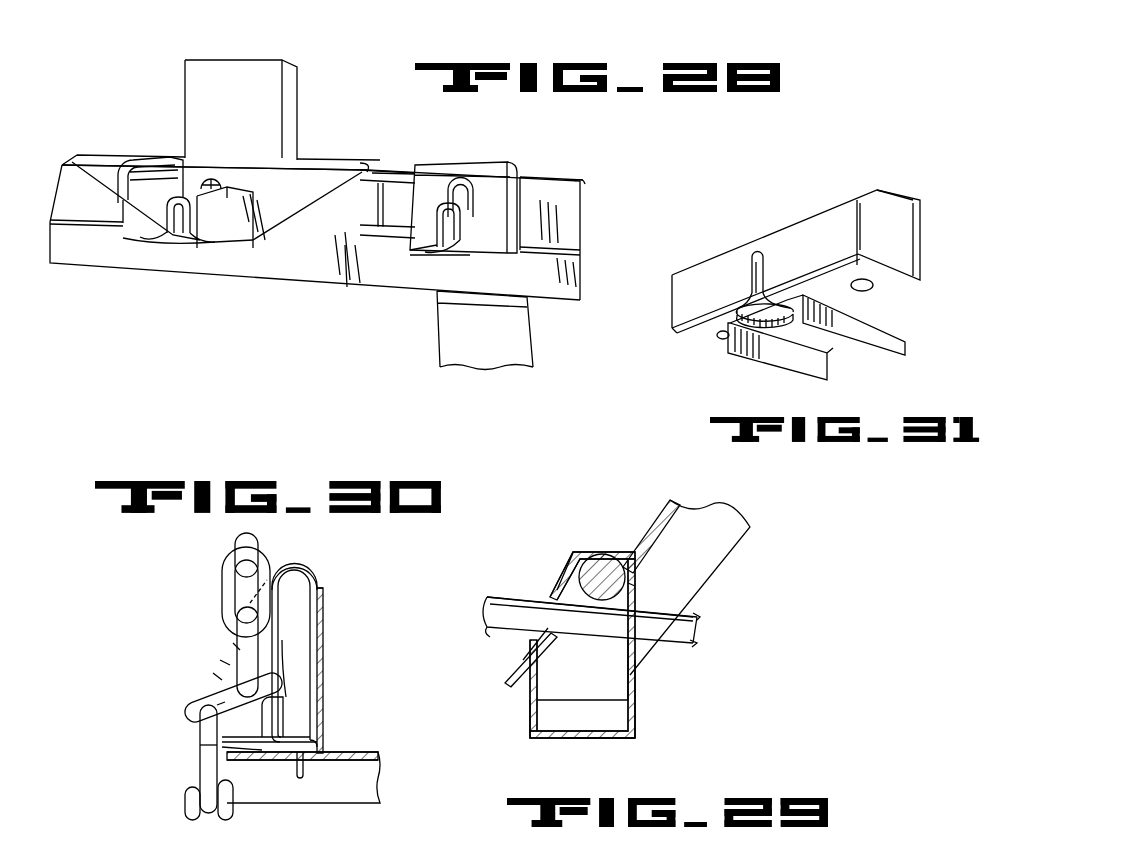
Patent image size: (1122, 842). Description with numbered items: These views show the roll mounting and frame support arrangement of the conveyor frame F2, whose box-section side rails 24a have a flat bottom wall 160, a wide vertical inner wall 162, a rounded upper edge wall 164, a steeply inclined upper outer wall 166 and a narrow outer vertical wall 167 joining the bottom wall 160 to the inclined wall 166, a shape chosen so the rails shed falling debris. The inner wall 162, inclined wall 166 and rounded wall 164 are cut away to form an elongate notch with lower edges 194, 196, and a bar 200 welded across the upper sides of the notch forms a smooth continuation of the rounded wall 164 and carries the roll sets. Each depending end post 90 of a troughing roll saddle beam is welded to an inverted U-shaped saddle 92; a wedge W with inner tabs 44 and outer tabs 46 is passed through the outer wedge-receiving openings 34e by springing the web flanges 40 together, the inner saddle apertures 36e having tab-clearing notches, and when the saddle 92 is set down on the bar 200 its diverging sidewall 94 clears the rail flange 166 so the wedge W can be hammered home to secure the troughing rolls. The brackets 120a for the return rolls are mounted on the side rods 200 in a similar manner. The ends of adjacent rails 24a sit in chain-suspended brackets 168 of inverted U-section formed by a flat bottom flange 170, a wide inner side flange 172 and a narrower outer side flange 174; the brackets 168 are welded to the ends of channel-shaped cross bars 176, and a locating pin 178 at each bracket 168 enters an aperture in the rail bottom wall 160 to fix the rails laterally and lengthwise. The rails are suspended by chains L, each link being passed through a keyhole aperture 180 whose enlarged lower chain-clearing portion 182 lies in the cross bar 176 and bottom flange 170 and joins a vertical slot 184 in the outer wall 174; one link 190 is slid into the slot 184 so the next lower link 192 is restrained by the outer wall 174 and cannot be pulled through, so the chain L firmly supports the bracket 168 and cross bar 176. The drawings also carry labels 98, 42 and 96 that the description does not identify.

In FIG. 28, the depending end post 90 is at (235, 68).
In FIG. 29, the depending end post 90 is at (737, 540).
In FIG. 28, the inverted U-shaped saddle 92 is at (103, 150).
In FIG. 29, the inverted U-shaped saddle 92 is at (648, 563).
In FIG. 28, the upper flange 98 is at (315, 160).
In FIG. 29, the upper flange 98 is at (563, 585).
In FIG. 28, the bar 200 is at (390, 174).
In FIG. 29, the bar 200 is at (598, 553).
In FIG. 28, the outer wedge-receiving openings 34e is at (222, 183).
In FIG. 29, the outer wedge-receiving openings 34e is at (563, 582).
In FIG. 29, the inner saddle apertures 36e is at (630, 588).
In FIG. 28, the wedge W is at (165, 212).
In FIG. 29, the wedge W is at (502, 593).
In FIG. 28, the web flanges 40 is at (205, 215).
In FIG. 29, the web flanges 40 is at (500, 612).
In FIG. 29, the bar end 42 is at (695, 606).
In FIG. 29, the inner tabs 44 is at (694, 636).
In FIG. 28, the outer tabs 46 is at (170, 226).
In FIG. 29, the outer tabs 46 is at (500, 630).
In FIG. 28, the diverging sidewall 94 is at (195, 243).
In FIG. 29, the diverging sidewall 94 is at (513, 652).
In FIG. 28, the flange 96 is at (325, 218).
In FIG. 29, the flange 96 is at (632, 697).
In FIG. 28, the brackets for the return rolls 120a is at (456, 348).
In FIG. 28, the rounded upper edge wall 164 is at (575, 177).
In FIG. 30, the rounded upper edge wall 164 is at (290, 562).
In FIG. 28, the box-section side rails 24a is at (577, 190).
In FIG. 30, the box-section side rails 24a is at (315, 562).
In FIG. 29, the box-section side rails 24a is at (632, 680).
In FIG. 28, the steeply inclined upper outer wall 166 is at (574, 223).
In FIG. 30, the steeply inclined upper outer wall 166 is at (233, 643).
In FIG. 29, the steeply inclined upper outer wall 166 is at (620, 653).
In FIG. 28, the narrow outer vertical wall 167 is at (574, 263).
In FIG. 30, the narrow outer vertical wall 167 is at (220, 660).
In FIG. 29, the narrow outer vertical wall 167 is at (537, 728).
In FIG. 31, the chain-suspended brackets 168 is at (893, 183).
In FIG. 30, the chain-suspended brackets 168 is at (330, 670).
In FIG. 31, the flat bottom flange 170 is at (690, 337).
In FIG. 30, the flat bottom flange 170 is at (300, 748).
In FIG. 31, the wide inner side flange 172 is at (908, 207).
In FIG. 30, the wide inner side flange 172 is at (325, 600).
In FIG. 31, the narrower outer side flange 174 is at (677, 310).
In FIG. 30, the narrower outer side flange 174 is at (213, 673).
In FIG. 31, the channel shaped cross bars 176 is at (908, 333).
In FIG. 30, the channel shaped cross bars 176 is at (363, 797).
In FIG. 31, the side rail locating pin 178 is at (723, 342).
In FIG. 30, the side rail locating pin 178 is at (282, 697).
In FIG. 31, the keyhole aperture 180 is at (768, 252).
In FIG. 30, the keyhole aperture 180 is at (205, 757).
In FIG. 31, the enlarged lower chain-clearing portion 182 is at (748, 302).
In FIG. 30, the enlarged lower chain-clearing portion 182 is at (238, 753).
In FIG. 31, the vertical slot 184 is at (760, 273).
In FIG. 30, the vertical slot 184 is at (215, 708).
In FIG. 30, the chain link 190 is at (190, 715).
In FIG. 30, the next lower link 192 is at (200, 747).
In FIG. 30, the flat bottom wall 160 is at (302, 733).
In FIG. 29, the flat bottom wall 160 is at (587, 743).
In FIG. 30, the wide vertical inner wall 162 is at (324, 637).
In FIG. 29, the wide vertical inner wall 162 is at (629, 713).
In FIG. 29, the lower edge of notch 194 is at (582, 703).
In FIG. 29, the lower edge of notch 196 is at (517, 643).
In FIG. 28, the frame F2 is at (556, 172).
In FIG. 30, the frame F2 is at (328, 580).
In FIG. 29, the frame F2 is at (720, 512).
In FIG. 30, the chains L is at (235, 540).